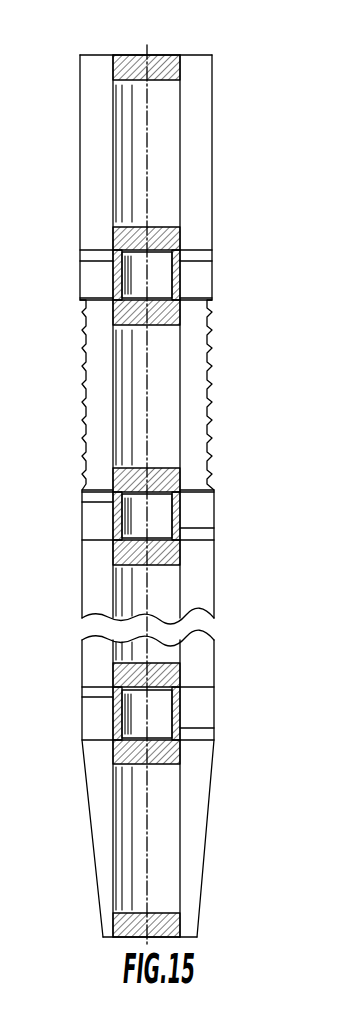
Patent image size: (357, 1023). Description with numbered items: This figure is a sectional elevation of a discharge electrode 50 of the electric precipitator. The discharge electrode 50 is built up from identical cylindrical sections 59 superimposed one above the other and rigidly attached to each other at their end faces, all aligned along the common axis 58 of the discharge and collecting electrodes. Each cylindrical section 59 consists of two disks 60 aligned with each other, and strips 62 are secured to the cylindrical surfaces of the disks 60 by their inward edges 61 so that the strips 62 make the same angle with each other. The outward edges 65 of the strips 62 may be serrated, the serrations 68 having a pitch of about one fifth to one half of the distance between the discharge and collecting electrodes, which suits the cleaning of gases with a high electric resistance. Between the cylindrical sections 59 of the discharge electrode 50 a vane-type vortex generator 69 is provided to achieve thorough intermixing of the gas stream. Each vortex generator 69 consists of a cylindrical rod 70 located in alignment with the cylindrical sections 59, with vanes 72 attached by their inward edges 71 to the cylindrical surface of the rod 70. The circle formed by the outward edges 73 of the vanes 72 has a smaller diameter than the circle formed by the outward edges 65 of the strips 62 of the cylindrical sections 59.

The discharge electrode 50 is at (159, 54).
The axis 58 is at (147, 136).
The cylindrical section 59 is at (109, 238).
The disk 60 is at (130, 63).
The inward edge 61 is at (118, 172).
The strip 62 is at (86, 110).
The outward edge 65 is at (80, 155).
The serration 68 is at (210, 410).
The vane-type vortex generator 69 is at (217, 270).
The cylindrical rod 70 is at (208, 260).
The inward edge 71 is at (182, 278).
The vane 72 is at (215, 290).
The outward edge 73 is at (80, 283).